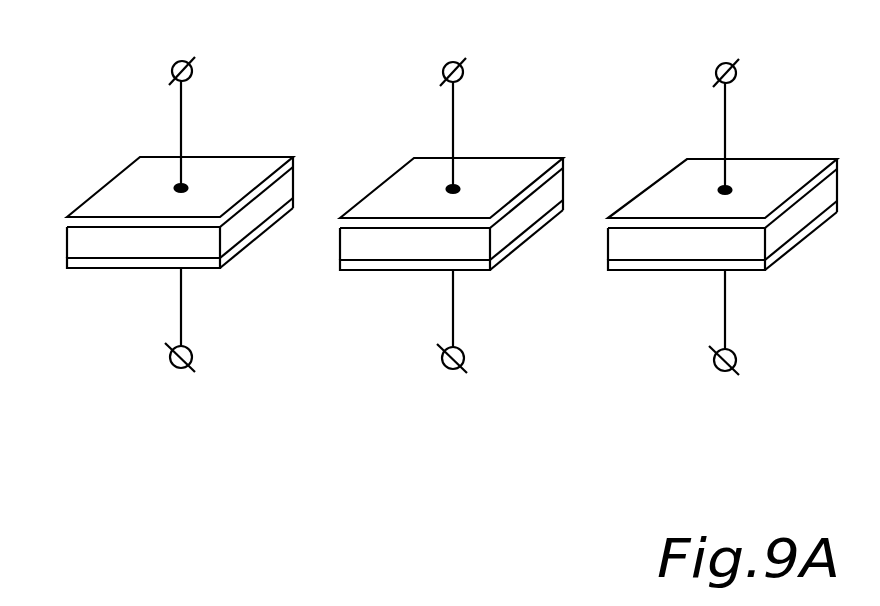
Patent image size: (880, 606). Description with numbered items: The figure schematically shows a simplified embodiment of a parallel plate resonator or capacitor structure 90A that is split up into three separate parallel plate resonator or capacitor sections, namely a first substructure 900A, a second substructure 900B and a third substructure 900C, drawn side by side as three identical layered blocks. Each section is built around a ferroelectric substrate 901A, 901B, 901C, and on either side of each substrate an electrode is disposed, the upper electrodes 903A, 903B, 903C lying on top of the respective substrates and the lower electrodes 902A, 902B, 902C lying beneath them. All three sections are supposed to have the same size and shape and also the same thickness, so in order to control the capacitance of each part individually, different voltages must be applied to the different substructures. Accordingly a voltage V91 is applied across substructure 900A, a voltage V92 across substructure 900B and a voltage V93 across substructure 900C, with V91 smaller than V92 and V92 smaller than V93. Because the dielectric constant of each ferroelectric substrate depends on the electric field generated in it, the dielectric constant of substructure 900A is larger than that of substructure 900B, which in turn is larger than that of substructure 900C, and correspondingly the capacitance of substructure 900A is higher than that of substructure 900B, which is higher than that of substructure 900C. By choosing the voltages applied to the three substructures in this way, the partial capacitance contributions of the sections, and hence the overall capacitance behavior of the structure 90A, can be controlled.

The parallel plate resonator or capacitor structure 90A is at (262, 479).
The first substructure 900A is at (236, 110).
The second substructure 900B is at (463, 194).
The third substructure 900C is at (735, 195).
The ferroelectric substrate 901A is at (202, 240).
The ferroelectric substrate 901B is at (451, 253).
The ferroelectric substrate 901C is at (722, 254).
The electrode 902A is at (100, 262).
The electrode 902B is at (451, 286).
The electrode 902C is at (722, 288).
The electrode 903A is at (134, 189).
The electrode 903B is at (441, 176).
The electrode 903C is at (713, 176).
The voltage V91 is at (180, 194).
The voltage V92 is at (455, 194).
The voltage V93 is at (728, 195).